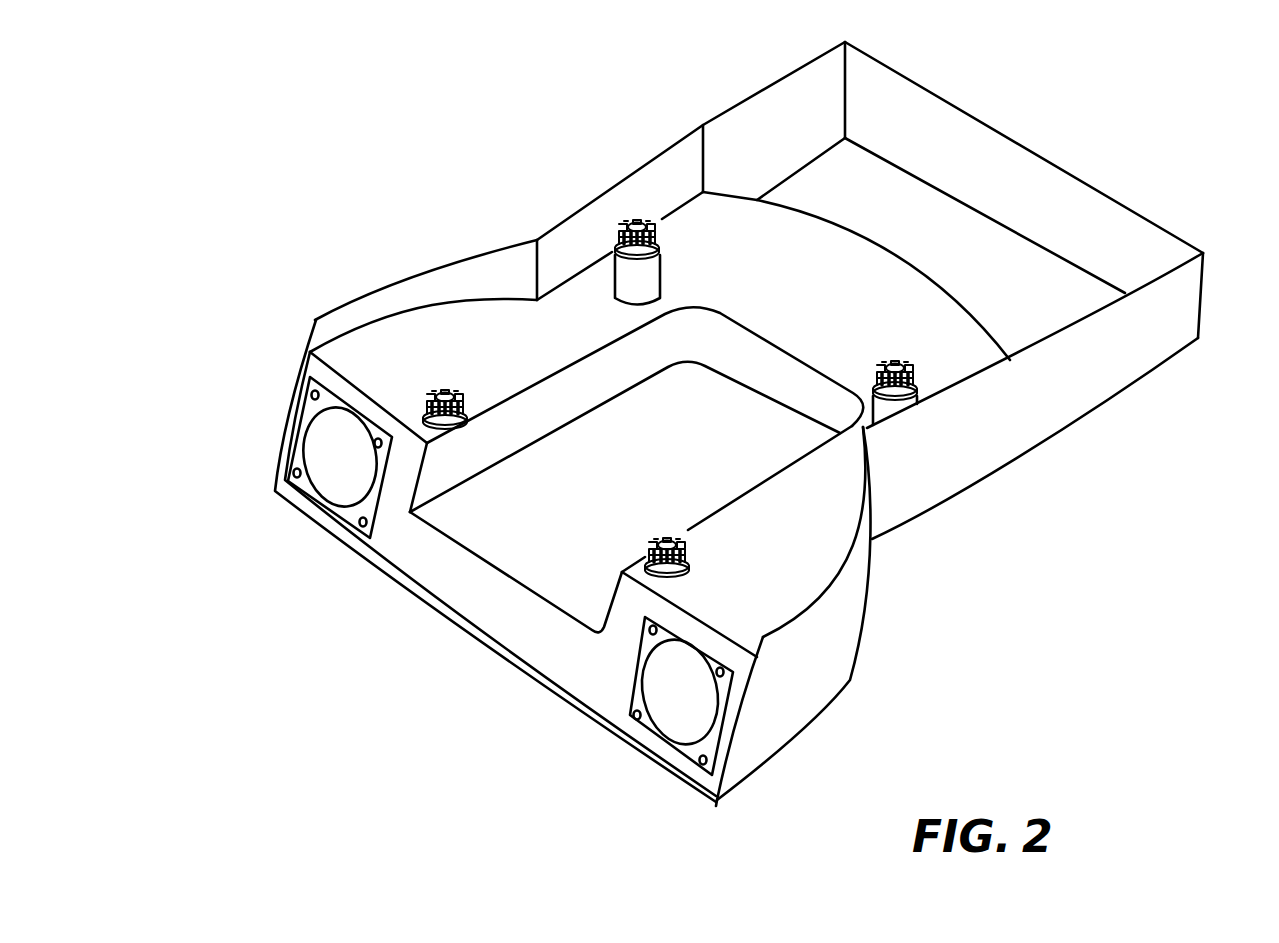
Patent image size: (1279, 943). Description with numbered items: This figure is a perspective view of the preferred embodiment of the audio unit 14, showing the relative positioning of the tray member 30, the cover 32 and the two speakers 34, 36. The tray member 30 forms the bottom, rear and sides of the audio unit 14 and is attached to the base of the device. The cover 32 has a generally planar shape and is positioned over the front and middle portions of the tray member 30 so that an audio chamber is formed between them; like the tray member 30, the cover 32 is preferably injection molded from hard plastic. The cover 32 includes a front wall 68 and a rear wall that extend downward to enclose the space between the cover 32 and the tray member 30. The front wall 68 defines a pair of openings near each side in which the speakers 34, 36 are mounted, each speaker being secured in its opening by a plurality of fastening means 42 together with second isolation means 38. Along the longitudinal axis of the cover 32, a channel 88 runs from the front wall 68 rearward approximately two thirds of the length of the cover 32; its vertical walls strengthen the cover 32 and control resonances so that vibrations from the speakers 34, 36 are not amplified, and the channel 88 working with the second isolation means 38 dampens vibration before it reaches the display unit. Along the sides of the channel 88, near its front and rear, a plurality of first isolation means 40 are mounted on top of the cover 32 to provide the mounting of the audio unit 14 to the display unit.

The audio unit 14 is at (1052, 123).
The tray member 30 is at (1163, 352).
The cover 32 is at (700, 212).
The speaker 34 is at (337, 513).
The speaker 36 is at (673, 725).
The second isolation means 38 is at (298, 373).
The first isolation means 40 is at (658, 230).
The fastening means 42 is at (311, 392).
The front wall 68 is at (462, 615).
The channel 88 is at (596, 485).